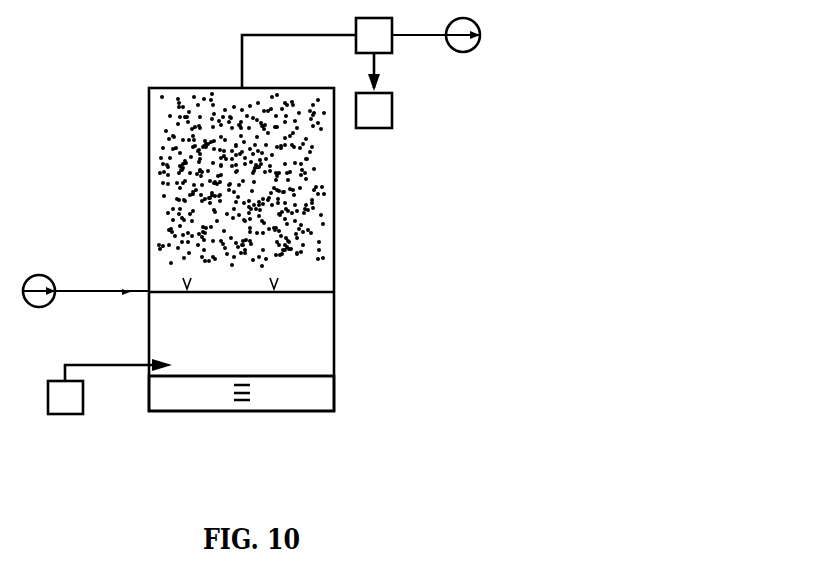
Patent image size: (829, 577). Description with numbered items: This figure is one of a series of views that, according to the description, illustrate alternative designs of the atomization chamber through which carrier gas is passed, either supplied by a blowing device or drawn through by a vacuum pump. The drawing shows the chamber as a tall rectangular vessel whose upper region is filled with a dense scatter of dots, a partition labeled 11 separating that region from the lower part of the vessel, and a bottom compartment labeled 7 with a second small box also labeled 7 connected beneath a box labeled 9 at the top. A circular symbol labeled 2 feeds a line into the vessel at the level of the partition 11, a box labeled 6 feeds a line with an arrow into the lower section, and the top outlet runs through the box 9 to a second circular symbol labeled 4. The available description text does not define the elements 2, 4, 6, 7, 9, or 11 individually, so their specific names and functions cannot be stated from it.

The inlet fan 2 is at (86, 305).
The outlet fan 4 is at (436, 50).
The heater 6 is at (110, 386).
The water tank 7 is at (270, 270).
The controller 9 is at (374, 54).
The partition plate 11 is at (286, 320).